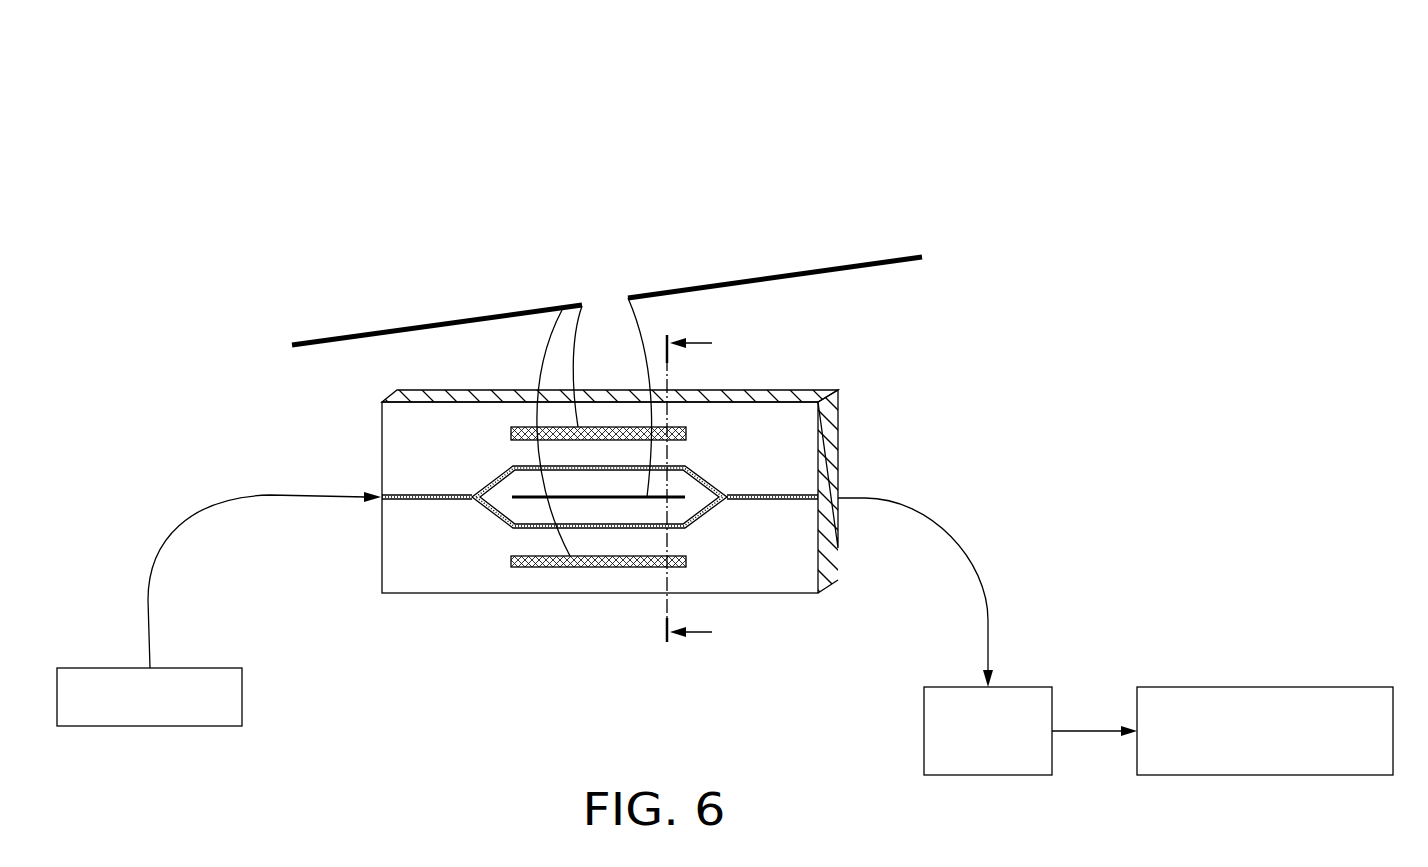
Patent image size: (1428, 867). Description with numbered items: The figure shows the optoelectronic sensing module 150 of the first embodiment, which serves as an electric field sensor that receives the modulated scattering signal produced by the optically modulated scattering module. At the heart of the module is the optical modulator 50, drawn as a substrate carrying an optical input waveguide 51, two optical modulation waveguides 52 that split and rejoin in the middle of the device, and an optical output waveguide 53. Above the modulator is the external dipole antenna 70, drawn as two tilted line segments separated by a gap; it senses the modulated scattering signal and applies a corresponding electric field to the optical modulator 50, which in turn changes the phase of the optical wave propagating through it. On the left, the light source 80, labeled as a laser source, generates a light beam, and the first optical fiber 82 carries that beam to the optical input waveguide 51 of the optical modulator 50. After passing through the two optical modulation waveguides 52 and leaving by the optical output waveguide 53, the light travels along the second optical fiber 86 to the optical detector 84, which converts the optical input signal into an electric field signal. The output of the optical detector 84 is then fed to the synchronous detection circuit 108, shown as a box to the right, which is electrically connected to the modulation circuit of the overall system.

The optoelectronic sensing module 150 is at (1012, 191).
The external dipole antenna 70 is at (776, 275).
The optical modulator 50 is at (838, 420).
The optical input waveguide 51 is at (403, 503).
The optical modulation waveguides 52 is at (683, 466).
The optical output waveguide 53 is at (797, 503).
The light source 80 is at (220, 668).
The first optical fiber 82 is at (210, 515).
The second optical fiber 86 is at (933, 528).
The optical detector 84 is at (1030, 687).
The synchronous detection circuit 108 is at (1265, 687).